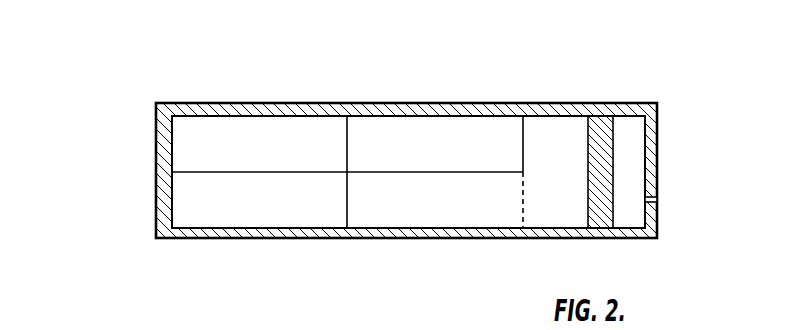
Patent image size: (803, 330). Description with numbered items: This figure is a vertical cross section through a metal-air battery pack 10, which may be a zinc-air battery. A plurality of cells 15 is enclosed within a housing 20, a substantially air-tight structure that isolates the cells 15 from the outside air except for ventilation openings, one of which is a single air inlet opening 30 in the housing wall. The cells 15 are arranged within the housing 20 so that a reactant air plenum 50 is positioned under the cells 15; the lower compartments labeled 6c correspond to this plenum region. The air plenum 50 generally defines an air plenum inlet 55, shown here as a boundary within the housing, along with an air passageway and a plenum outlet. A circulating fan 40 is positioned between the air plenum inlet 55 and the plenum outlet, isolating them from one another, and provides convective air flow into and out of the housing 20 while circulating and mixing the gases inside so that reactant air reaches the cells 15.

The metal-air battery pack 10 is at (128, 101).
The housing 20 is at (152, 155).
The cells 15 is at (240, 155).
The lower chambers 6c is at (240, 210).
The reactant air plenum 50 is at (196, 193).
The air plenum inlet 55 is at (530, 198).
The circulating fan 40 is at (588, 143).
The air inlet opening 30 is at (657, 200).